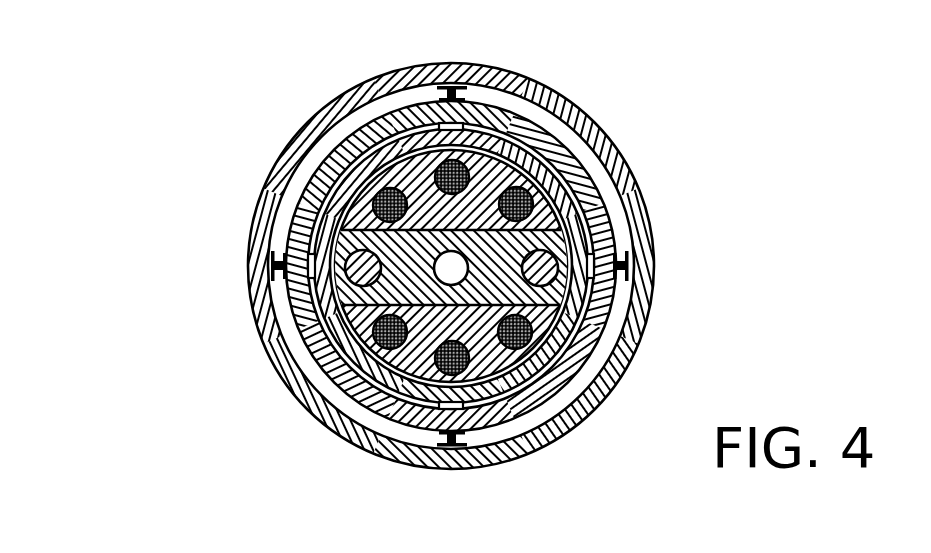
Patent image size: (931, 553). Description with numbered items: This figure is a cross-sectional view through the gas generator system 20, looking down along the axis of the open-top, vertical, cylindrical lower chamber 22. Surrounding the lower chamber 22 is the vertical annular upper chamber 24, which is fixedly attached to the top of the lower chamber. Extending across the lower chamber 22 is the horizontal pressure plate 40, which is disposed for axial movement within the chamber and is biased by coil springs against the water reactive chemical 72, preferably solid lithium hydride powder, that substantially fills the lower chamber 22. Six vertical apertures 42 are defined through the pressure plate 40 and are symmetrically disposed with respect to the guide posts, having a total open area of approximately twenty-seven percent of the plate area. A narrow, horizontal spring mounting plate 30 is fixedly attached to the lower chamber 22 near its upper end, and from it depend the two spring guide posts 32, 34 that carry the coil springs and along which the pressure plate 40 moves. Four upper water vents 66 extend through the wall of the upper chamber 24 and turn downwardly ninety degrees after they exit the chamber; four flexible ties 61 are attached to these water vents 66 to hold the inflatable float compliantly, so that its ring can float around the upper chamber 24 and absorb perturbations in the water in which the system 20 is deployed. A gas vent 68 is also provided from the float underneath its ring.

The gas generator system 20 is at (120, 328).
The lower chamber 22 is at (337, 375).
The upper chamber 24 is at (574, 174).
The spring mounting plate 30 is at (552, 233).
The spring guide post 32 is at (352, 276).
The spring guide post 34 is at (546, 265).
The pressure plate 40 is at (410, 163).
The aperture 42 is at (527, 186).
The flexible tie 61 is at (444, 86).
The upper water vent 66 is at (462, 93).
The gas vent 68 is at (318, 152).
The water reactive chemical 72 is at (458, 168).